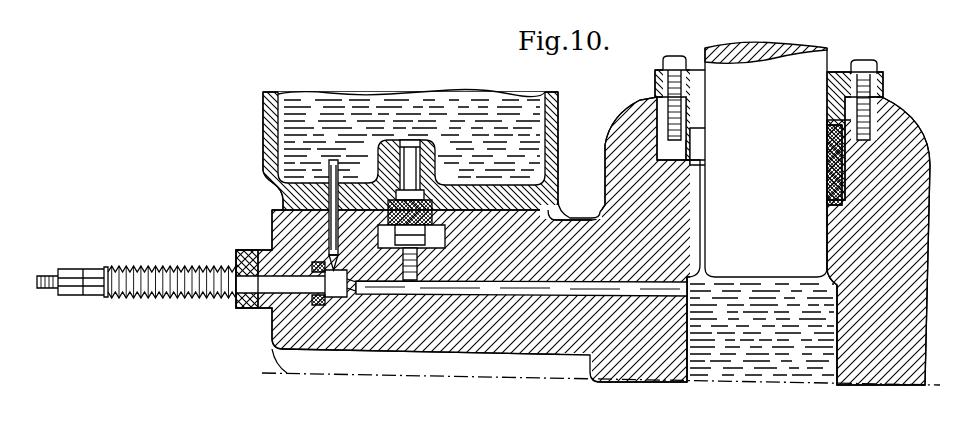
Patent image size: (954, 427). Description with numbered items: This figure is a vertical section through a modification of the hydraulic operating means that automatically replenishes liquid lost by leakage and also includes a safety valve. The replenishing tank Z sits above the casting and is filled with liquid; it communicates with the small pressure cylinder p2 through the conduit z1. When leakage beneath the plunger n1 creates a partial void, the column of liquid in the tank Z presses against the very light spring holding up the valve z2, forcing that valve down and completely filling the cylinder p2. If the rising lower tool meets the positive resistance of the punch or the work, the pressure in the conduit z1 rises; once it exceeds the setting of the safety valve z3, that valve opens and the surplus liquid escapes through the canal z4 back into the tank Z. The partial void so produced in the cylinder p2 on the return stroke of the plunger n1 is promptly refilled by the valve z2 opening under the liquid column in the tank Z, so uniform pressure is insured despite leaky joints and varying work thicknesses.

The replenishing tank Z is at (434, 154).
The conduit z1 is at (566, 262).
The valve z2 is at (410, 145).
The safety valve z3 is at (325, 283).
The canal z4 is at (333, 205).
The plunger n1 is at (766, 159).
The small pressure cylinder p2 is at (765, 303).